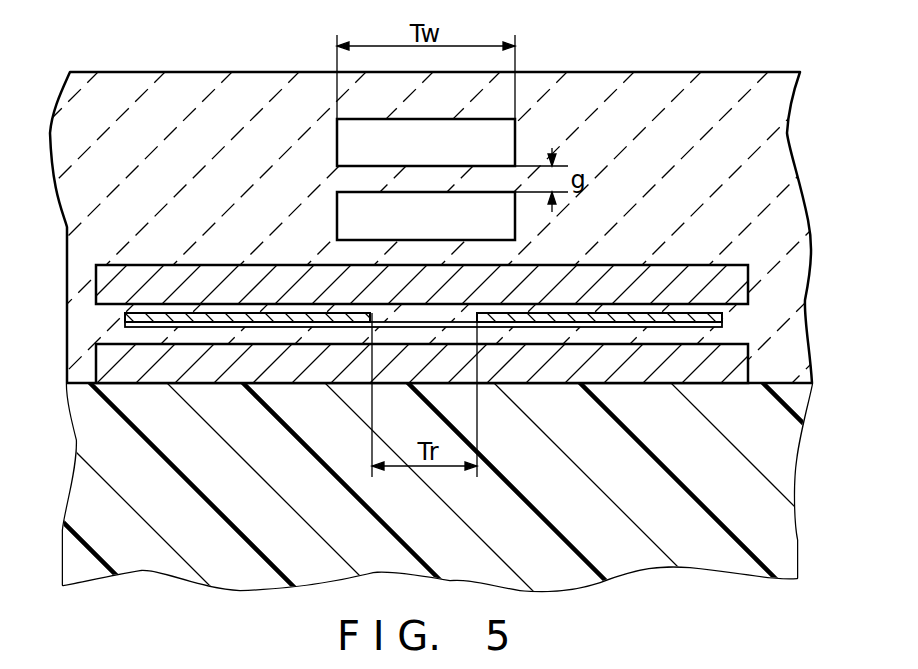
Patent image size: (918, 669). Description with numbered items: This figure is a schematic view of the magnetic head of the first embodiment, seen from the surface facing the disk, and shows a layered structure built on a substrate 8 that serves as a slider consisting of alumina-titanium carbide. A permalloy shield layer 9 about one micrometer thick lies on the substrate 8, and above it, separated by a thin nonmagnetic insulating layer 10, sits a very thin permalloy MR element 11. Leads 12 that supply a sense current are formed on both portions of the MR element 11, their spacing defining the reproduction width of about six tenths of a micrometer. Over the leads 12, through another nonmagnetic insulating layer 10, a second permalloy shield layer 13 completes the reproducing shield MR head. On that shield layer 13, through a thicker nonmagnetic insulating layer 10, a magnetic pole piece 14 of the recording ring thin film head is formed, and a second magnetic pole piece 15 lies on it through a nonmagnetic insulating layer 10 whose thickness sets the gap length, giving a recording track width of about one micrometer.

The substrate 8 is at (775, 507).
The permalloy shield layer 9 is at (732, 356).
The nonmagnetic insulating layer 10 is at (785, 300).
The MR element 11 is at (417, 327).
The leads 12 is at (183, 314).
The permalloy shield layer 13 is at (740, 266).
The magnetic pole piece 14 is at (502, 232).
The magnetic pole piece 15 is at (513, 132).